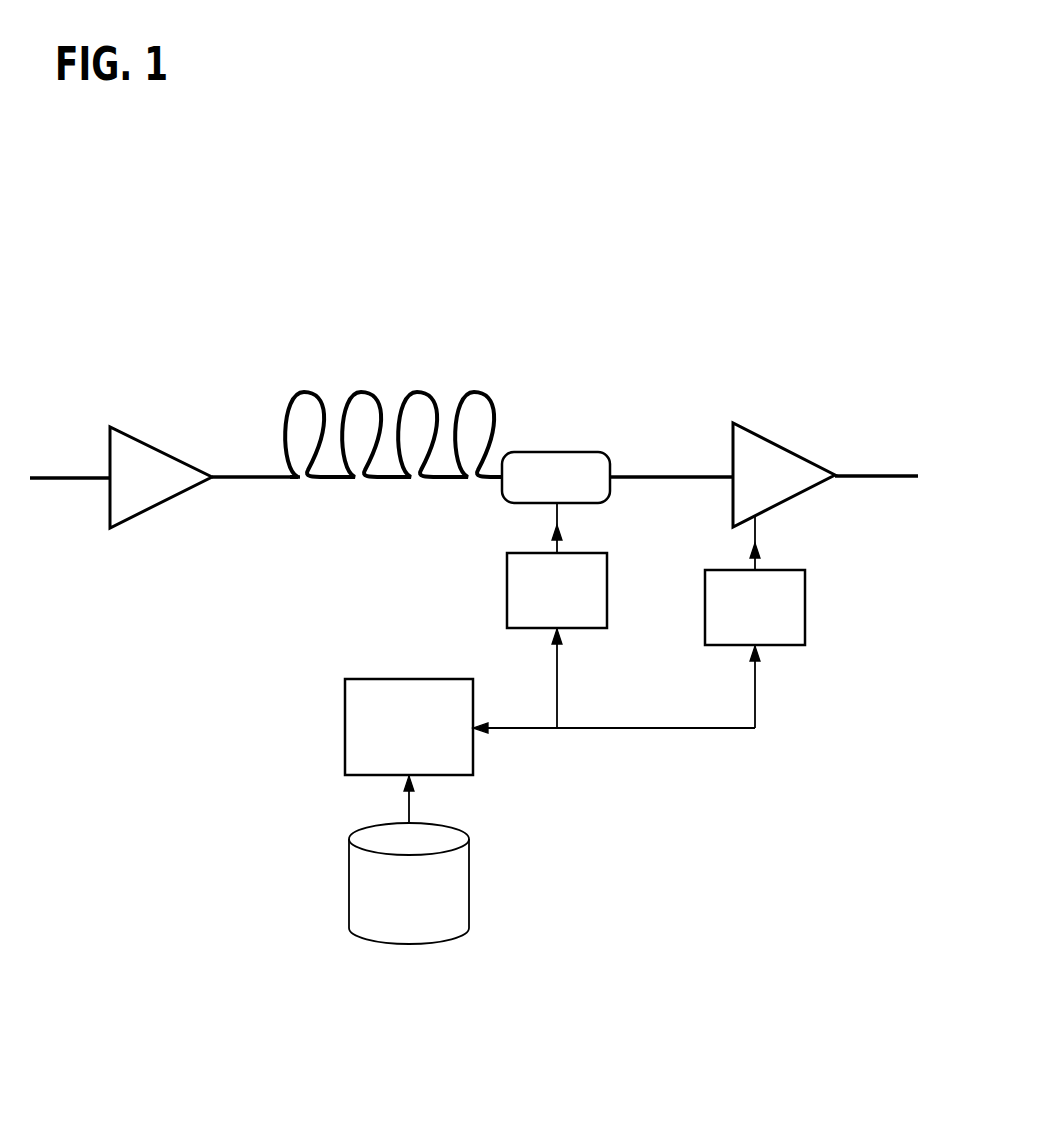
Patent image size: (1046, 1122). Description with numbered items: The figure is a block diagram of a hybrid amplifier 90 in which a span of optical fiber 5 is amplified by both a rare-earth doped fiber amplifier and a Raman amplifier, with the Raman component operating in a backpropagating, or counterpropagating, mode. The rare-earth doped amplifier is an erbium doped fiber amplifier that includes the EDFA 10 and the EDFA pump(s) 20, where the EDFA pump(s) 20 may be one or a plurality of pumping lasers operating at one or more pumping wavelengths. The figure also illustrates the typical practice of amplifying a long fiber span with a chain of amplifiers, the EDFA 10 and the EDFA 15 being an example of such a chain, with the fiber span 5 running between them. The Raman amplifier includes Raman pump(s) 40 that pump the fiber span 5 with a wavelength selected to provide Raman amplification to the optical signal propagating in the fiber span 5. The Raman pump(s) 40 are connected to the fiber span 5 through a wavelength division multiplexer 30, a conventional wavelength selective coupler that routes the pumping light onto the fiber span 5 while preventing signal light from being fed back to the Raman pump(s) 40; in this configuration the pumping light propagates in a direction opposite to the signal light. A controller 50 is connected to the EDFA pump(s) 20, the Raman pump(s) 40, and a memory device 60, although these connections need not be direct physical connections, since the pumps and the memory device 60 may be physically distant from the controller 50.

The hybrid amplifier 90 is at (198, 226).
The EDFA 15 is at (215, 468).
The optical fiber span 5 is at (481, 391).
The wavelength division multiplexer 30 is at (563, 449).
The Raman pump(s) 40 is at (610, 584).
The EDFA 10 is at (840, 470).
The EDFA pump(s) 20 is at (808, 600).
The controller 50 is at (412, 676).
The memory device 60 is at (472, 878).